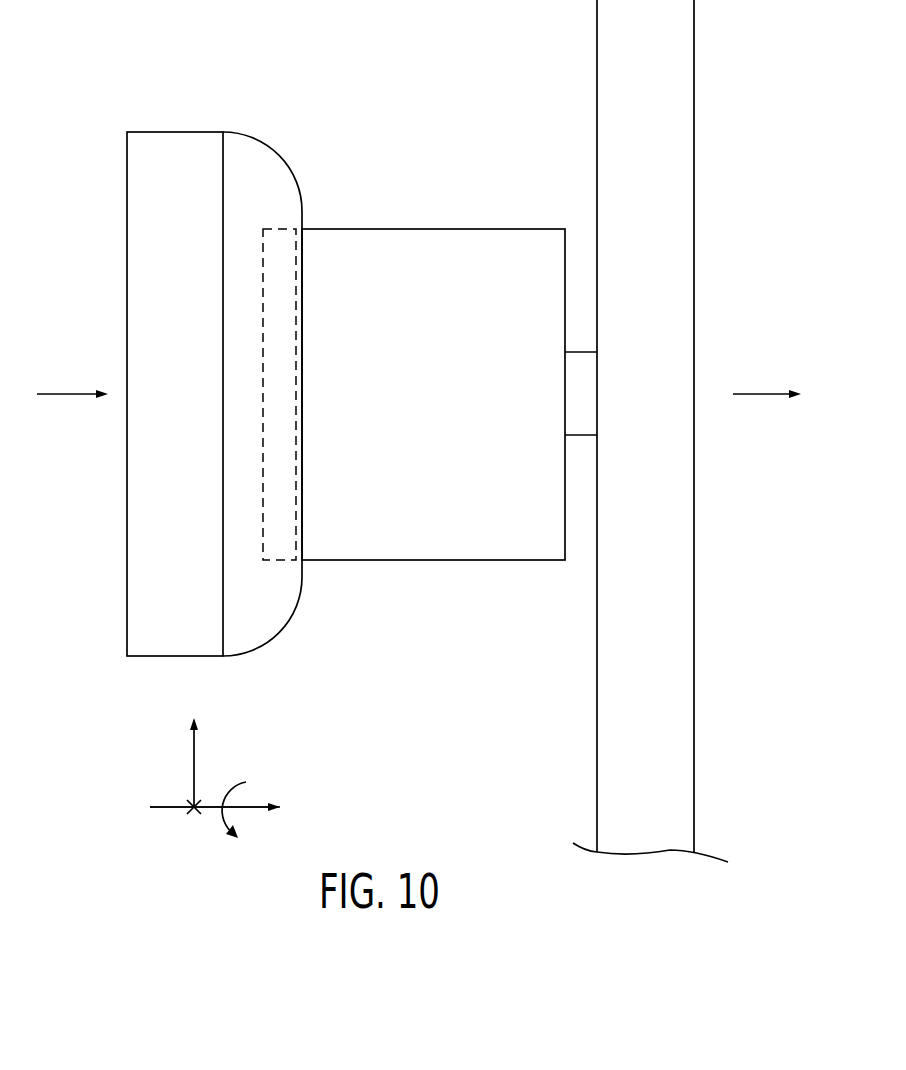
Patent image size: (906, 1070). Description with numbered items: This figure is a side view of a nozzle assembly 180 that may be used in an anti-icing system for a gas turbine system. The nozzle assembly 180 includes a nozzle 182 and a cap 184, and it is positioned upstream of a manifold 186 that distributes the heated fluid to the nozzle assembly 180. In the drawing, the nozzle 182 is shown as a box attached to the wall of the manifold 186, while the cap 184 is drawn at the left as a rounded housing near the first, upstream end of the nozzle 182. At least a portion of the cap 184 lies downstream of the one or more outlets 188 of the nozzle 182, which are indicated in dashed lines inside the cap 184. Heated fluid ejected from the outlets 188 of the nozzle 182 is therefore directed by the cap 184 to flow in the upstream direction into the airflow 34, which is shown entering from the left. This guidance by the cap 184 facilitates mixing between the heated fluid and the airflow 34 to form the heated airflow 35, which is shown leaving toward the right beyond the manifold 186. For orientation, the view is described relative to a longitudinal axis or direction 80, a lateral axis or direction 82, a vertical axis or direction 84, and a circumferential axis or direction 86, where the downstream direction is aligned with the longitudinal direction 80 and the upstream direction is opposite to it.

The nozzle assembly 180 is at (315, 67).
The nozzle 182 is at (410, 245).
The cap 184 is at (182, 147).
The manifold 186 is at (676, 45).
The outlets 188 is at (282, 226).
The airflow 34 is at (68, 397).
The heated airflow 35 is at (760, 397).
The longitudinal axis or direction 80 is at (253, 808).
The lateral axis or direction 82 is at (152, 807).
The vertical axis or direction 84 is at (192, 769).
The circumferential axis or direction 86 is at (244, 797).